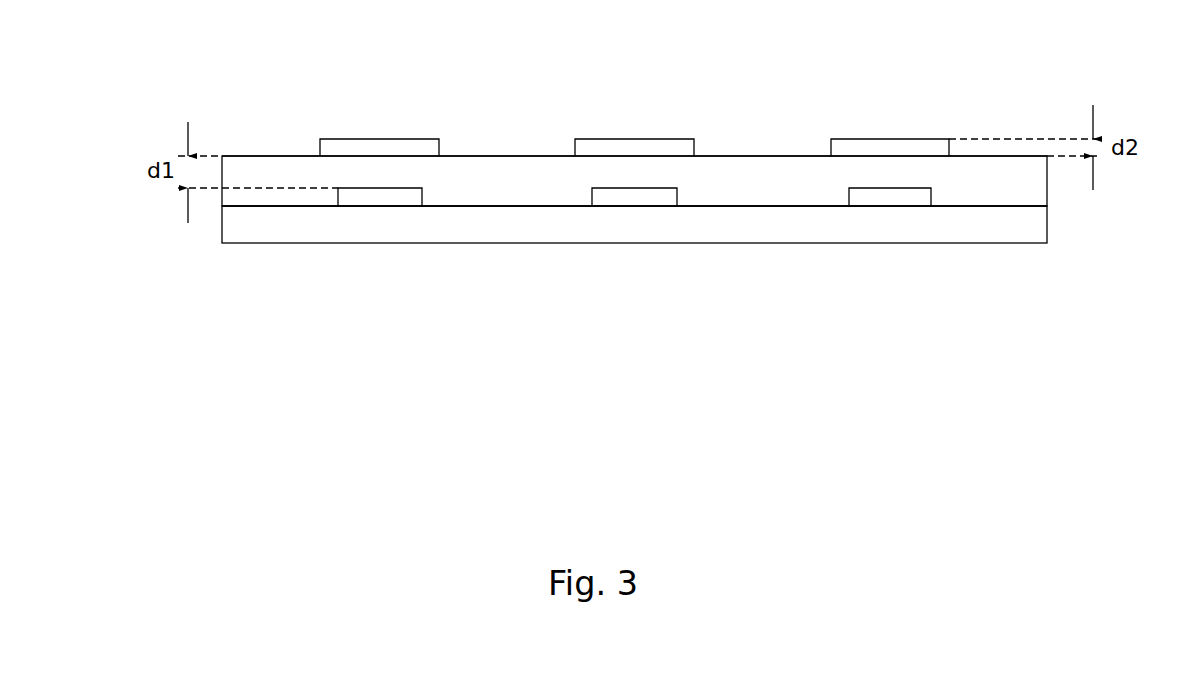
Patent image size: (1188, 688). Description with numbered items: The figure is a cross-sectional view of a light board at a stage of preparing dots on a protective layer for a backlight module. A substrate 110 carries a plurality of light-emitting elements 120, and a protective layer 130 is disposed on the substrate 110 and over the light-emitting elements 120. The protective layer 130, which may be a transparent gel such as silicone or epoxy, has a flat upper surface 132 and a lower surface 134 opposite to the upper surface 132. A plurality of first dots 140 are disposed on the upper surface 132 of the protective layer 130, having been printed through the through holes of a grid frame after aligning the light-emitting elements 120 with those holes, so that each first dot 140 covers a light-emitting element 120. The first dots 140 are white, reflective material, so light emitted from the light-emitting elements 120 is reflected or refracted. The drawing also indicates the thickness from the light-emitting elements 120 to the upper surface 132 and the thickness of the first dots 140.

The substrate 110 is at (1047, 226).
The light-emitting elements 120 is at (848, 193).
The protective layer 130 is at (1047, 193).
The upper surface 132 is at (757, 156).
The lower surface 134 is at (483, 206).
The first dots 140 is at (888, 139).